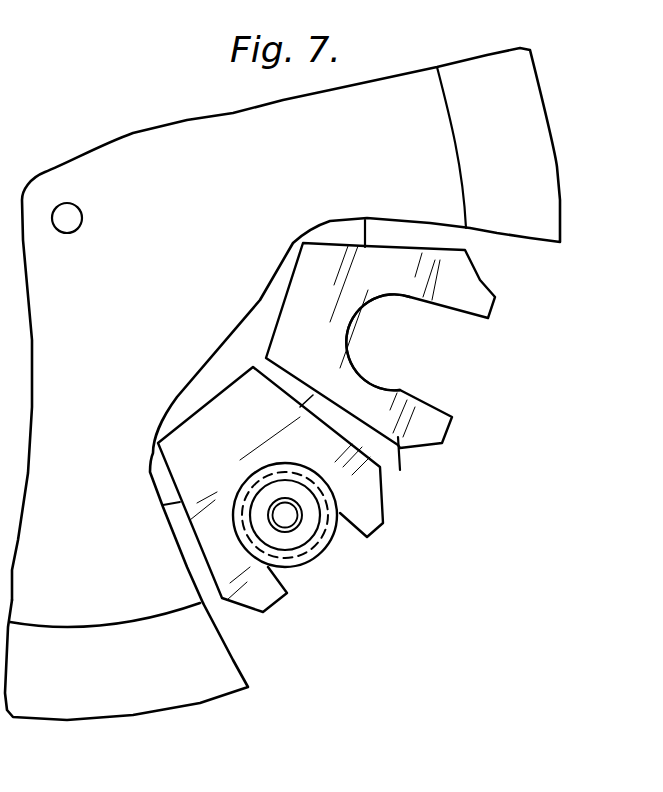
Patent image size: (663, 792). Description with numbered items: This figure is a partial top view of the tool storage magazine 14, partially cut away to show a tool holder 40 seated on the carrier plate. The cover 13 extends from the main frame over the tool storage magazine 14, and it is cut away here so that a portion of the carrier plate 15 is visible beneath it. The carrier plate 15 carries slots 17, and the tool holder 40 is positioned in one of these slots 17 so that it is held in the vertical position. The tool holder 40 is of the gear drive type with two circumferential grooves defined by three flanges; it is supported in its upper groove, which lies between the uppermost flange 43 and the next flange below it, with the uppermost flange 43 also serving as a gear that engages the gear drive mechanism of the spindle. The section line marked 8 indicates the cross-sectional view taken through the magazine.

The section line 8- 8 is at (8, 163).
The cover 13 is at (137, 706).
The tool storage magazine 14 is at (402, 639).
The carrier plate 15 is at (367, 487).
The slots 17 is at (365, 335).
The tool holder 40 is at (334, 549).
The uppermost flange 43 is at (300, 566).